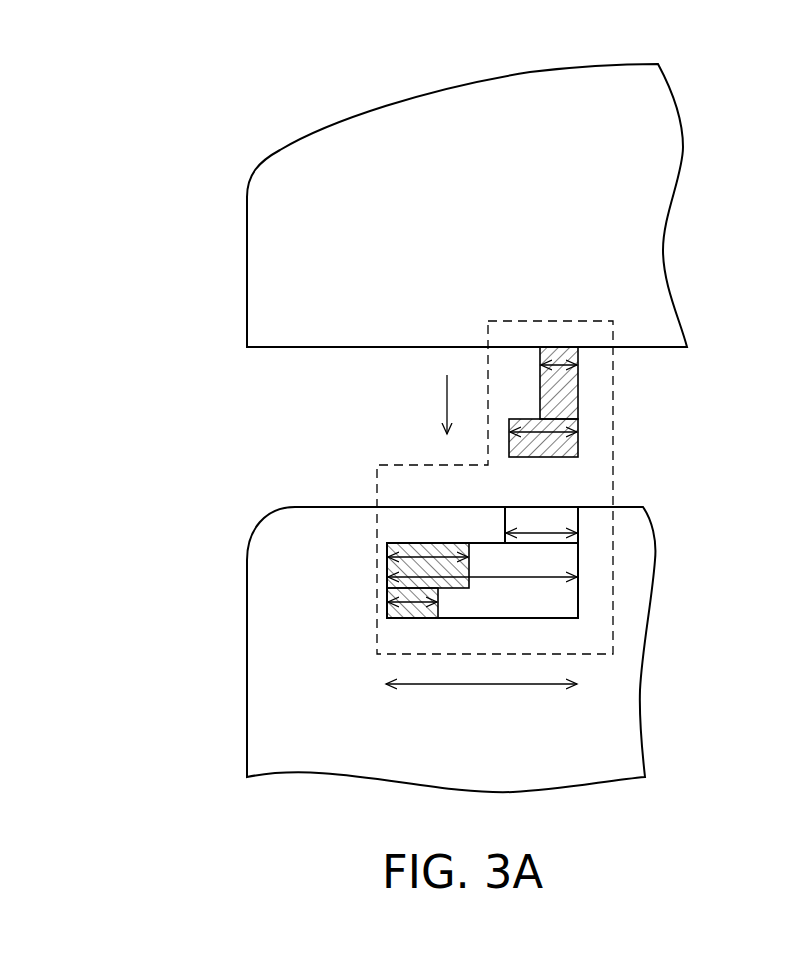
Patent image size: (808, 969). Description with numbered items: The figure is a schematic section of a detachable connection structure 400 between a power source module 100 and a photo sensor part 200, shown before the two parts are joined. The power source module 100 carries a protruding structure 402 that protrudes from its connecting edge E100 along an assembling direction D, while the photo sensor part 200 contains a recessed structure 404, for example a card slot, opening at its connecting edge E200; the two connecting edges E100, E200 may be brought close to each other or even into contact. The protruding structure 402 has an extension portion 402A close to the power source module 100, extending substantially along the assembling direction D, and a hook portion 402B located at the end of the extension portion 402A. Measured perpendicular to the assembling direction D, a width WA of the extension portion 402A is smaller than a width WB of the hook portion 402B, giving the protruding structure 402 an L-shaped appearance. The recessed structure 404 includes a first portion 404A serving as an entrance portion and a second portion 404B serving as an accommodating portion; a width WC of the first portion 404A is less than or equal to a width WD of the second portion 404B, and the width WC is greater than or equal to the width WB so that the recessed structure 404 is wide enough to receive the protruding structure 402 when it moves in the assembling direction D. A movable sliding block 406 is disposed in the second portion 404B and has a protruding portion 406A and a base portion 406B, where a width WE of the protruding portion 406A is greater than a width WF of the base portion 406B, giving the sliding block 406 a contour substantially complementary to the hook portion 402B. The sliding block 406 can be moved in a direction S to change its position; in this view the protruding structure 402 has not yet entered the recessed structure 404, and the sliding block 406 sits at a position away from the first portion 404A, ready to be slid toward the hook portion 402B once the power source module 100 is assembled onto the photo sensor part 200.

The power source module 100 is at (268, 215).
The connecting edge of the power source module E100 is at (313, 349).
The photo sensor part 200 is at (270, 701).
The connecting edge of the photo sensor part E200 is at (345, 506).
The detachable connection structure 400 is at (563, 321).
The protruding structure 402 is at (650, 411).
The extension portion 402A is at (578, 402).
The hook portion 402B is at (578, 448).
The recessed structure 404 is at (655, 550).
The first portion 404A is at (579, 523).
The second portion 404B is at (579, 557).
The sliding block 406 is at (276, 599).
The protruding portion 406A is at (308, 565).
The base portion 406B is at (292, 627).
The width of the extension portion WA is at (578, 387).
The width of the hook portion WB is at (543, 457).
The width of the first portion WC is at (542, 533).
The width of the second portion WD is at (517, 577).
The width of the protruding portion WE is at (455, 548).
The width of the base portion WF is at (412, 605).
The direction S is at (497, 684).
The assembling direction D is at (442, 407).